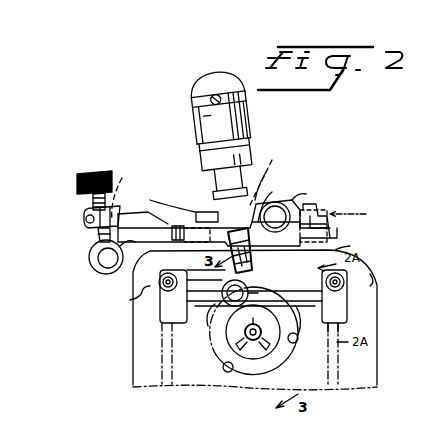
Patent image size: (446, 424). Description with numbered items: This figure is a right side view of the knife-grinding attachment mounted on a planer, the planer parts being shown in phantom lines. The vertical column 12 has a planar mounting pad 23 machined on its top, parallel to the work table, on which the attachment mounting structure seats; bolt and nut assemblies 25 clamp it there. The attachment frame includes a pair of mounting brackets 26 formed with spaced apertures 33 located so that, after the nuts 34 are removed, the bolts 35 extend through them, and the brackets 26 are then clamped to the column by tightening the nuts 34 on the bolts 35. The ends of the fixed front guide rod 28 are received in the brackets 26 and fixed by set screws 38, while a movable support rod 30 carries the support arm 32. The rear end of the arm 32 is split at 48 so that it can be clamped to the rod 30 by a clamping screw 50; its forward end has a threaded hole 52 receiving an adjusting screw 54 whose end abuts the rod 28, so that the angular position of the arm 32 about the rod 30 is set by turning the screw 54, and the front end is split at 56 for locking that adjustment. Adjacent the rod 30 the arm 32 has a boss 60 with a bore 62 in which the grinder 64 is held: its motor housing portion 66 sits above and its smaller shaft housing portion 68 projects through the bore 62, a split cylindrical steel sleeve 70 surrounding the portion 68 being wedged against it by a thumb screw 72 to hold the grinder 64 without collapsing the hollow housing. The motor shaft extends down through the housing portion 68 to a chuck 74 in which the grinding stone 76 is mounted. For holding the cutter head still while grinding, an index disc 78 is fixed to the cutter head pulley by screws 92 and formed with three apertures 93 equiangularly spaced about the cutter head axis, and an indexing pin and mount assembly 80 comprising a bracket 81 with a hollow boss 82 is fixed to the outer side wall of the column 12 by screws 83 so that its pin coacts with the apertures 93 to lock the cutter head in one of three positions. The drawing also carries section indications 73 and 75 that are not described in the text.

The vertical column 12 is at (380, 366).
The indexing pin and mount assembly 80 is at (355, 303).
The grinding stone 76 is at (258, 290).
The spaced apertures 33 is at (166, 273).
The planar mounting pad 23 is at (200, 270).
The screws 83 is at (131, 300).
The index disc 78 is at (252, 380).
The screws 92 is at (240, 338).
The hollow boss 82 is at (212, 322).
The apertures 93 is at (225, 372).
The bracket 81 is at (337, 342).
The support arm 32 is at (153, 220).
The thumb screw 72 is at (190, 224).
The bolt and nut assemblies 25 is at (196, 216).
The split cylindrical steel sleeve 70 is at (210, 198).
The motor housing portion 66 is at (197, 134).
The grinder 64 is at (257, 105).
The shaft housing portion 68 is at (266, 172).
The bore 62 is at (273, 160).
The boss 60 is at (268, 190).
The support rod 30 is at (276, 214).
The clamping screw 50 is at (296, 200).
The split 48 is at (308, 204).
The bolts 35 is at (328, 204).
The nuts 34 is at (332, 220).
The direction arrow 75 is at (356, 214).
The lug 73 is at (350, 246).
The chuck 74 is at (250, 266).
The adjusting screw 54 is at (76, 184).
The threaded hole 52 is at (123, 178).
The split 56 is at (84, 221).
The set screws 38 is at (98, 241).
The guide rod 28 is at (100, 258).
The mounting brackets 26 is at (92, 276).